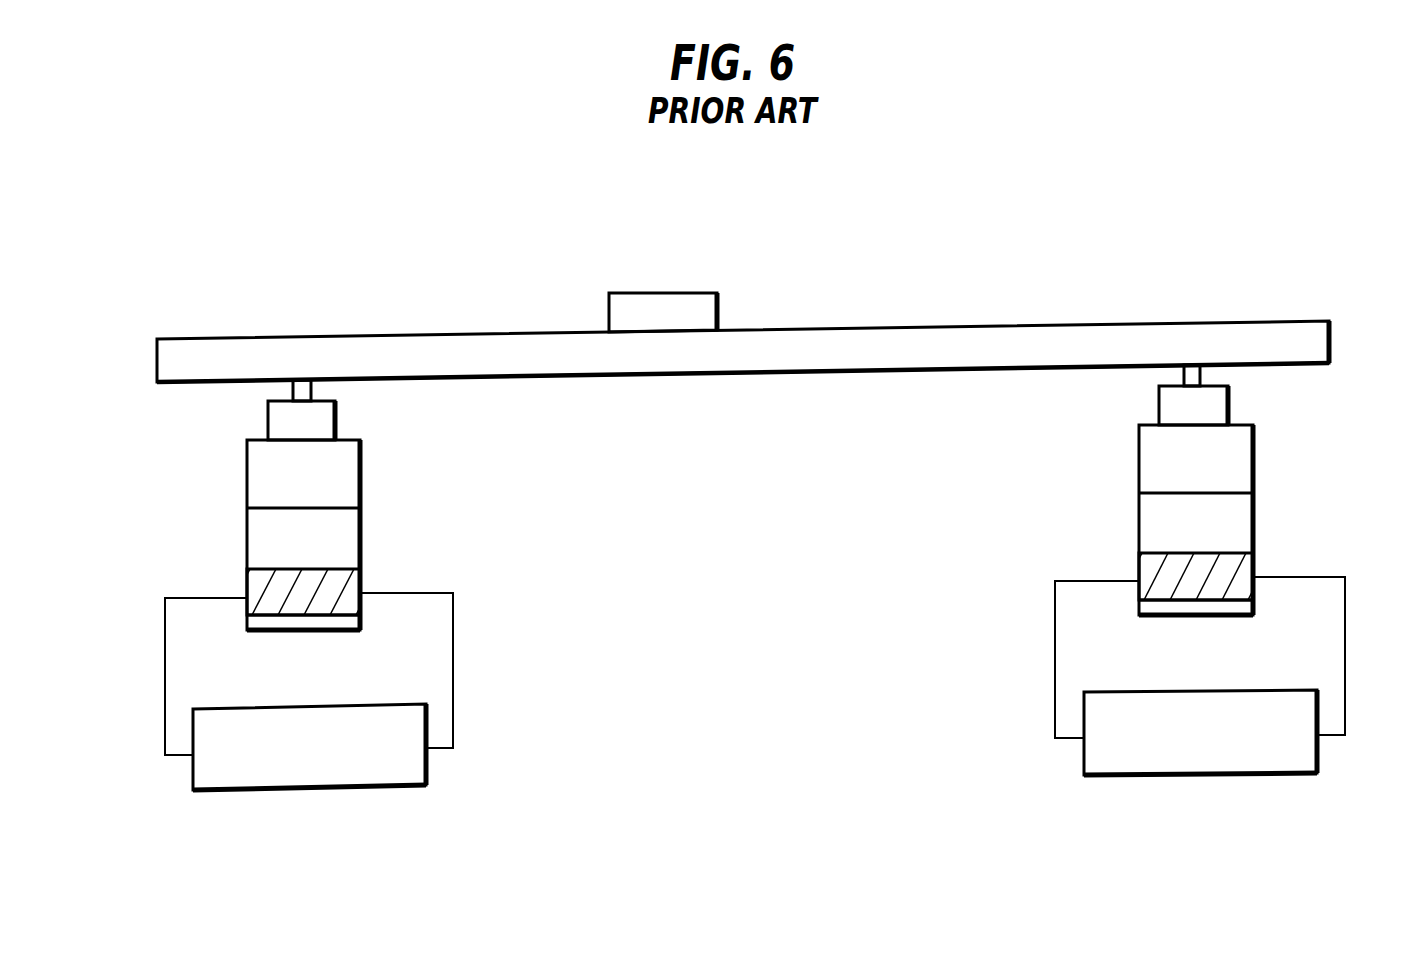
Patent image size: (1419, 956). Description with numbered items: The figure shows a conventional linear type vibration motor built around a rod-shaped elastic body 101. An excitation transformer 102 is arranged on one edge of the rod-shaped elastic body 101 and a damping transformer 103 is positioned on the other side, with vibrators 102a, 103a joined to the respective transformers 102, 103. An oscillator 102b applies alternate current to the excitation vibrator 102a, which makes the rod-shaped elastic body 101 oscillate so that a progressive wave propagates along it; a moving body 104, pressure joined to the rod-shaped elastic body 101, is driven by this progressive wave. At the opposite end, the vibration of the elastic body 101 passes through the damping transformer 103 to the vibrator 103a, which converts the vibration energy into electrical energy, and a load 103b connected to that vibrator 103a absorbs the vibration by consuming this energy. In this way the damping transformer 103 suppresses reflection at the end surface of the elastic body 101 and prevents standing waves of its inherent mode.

The rod-shaped elastic body 101 is at (803, 327).
The moving body 104 is at (665, 292).
The excitation transformer 102 is at (290, 505).
The excitation vibrator 102a is at (345, 589).
The oscillator 102b is at (312, 707).
The damping transformer 103 is at (1198, 490).
The vibrator 103a is at (1143, 576).
The load 103b is at (1203, 690).